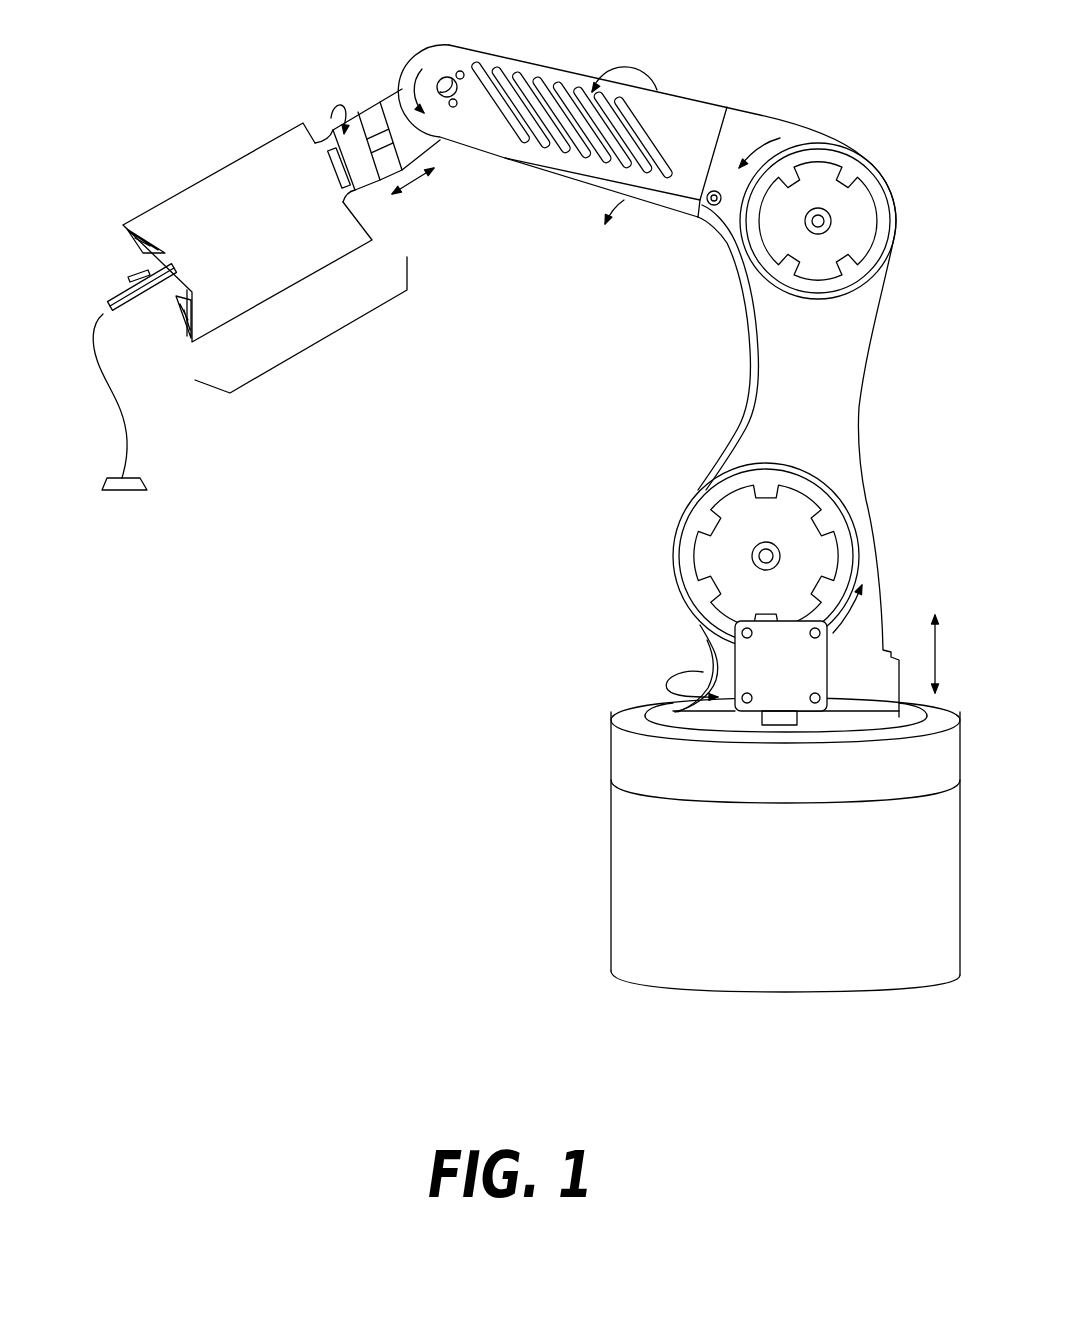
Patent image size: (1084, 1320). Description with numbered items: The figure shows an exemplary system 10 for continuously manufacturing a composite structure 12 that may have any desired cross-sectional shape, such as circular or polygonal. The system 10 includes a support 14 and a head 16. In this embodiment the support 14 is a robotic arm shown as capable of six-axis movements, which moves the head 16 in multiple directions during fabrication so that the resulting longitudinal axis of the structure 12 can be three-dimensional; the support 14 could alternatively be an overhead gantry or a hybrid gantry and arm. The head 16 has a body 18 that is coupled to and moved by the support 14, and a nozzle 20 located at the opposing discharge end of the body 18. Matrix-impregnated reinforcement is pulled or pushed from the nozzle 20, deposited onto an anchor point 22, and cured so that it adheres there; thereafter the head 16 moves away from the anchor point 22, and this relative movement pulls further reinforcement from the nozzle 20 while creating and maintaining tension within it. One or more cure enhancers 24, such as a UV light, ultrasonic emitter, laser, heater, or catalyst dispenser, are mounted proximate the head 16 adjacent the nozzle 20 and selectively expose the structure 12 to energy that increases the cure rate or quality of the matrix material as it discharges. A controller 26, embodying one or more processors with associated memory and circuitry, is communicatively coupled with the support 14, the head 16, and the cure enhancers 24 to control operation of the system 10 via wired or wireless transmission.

The system 10 is at (501, 518).
The composite structure 12 is at (128, 443).
The support 14 is at (810, 435).
The head 16 is at (327, 336).
The body 18 is at (256, 245).
The nozzle 20 is at (108, 303).
The anchor point 22 is at (118, 490).
The cure enhancer 24 is at (137, 248).
The controller 26 is at (791, 679).